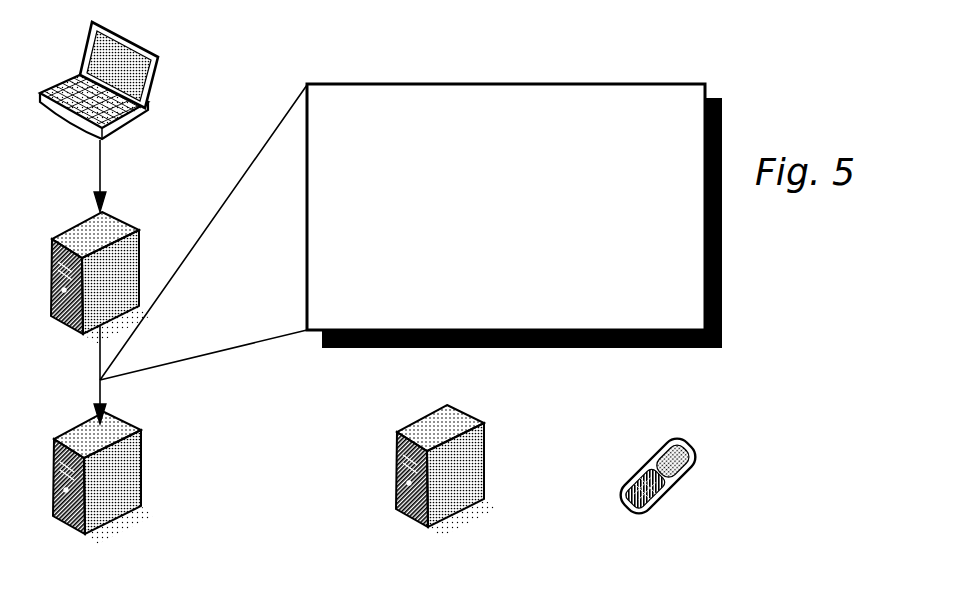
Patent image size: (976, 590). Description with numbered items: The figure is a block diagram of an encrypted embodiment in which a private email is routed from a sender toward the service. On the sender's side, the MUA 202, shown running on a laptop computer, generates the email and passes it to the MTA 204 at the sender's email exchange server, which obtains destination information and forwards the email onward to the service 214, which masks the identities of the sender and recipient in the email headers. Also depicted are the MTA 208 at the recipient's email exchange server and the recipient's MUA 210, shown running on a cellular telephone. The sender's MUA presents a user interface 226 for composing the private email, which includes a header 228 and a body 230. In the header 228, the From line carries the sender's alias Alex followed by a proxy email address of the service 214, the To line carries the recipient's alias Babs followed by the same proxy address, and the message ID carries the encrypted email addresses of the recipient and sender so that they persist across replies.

The MUA 202 is at (112, 22).
The MTA 204 is at (121, 220).
The service 214 is at (128, 413).
The MTA 208 is at (465, 409).
The MUA 210 is at (682, 440).
The user interface 226 is at (517, 190).
The header 228 is at (495, 112).
The body 230 is at (532, 278).